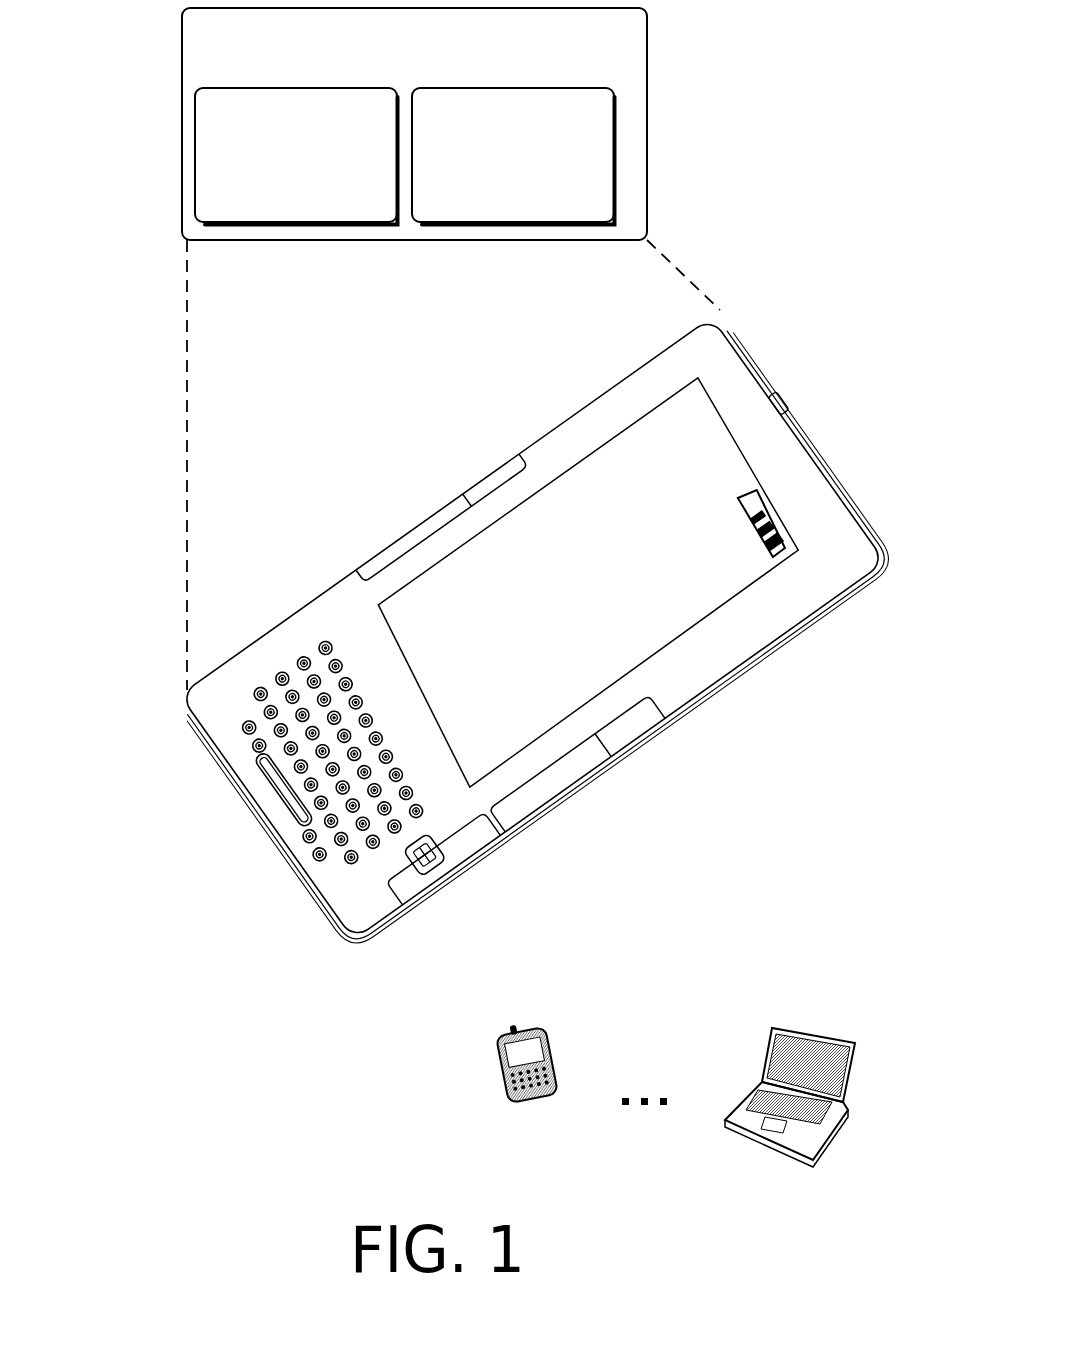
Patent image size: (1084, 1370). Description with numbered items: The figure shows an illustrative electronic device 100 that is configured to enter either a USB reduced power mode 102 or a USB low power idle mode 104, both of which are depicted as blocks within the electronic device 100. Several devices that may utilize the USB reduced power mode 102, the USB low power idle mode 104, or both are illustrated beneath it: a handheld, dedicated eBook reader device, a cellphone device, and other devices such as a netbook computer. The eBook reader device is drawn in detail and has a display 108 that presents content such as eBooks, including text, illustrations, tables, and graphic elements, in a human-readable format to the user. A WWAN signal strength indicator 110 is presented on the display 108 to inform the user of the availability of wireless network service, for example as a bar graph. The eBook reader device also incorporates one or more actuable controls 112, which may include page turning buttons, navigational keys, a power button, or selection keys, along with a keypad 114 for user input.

The electronic device 100 is at (433, 66).
The USB reduced power mode 102 is at (315, 192).
The USB low power idle mode 104 is at (531, 192).
The display 108 is at (690, 417).
The WWAN signal strength indicator 110 is at (753, 503).
The actuable controls 112 is at (418, 528).
The keypad 114 is at (257, 740).